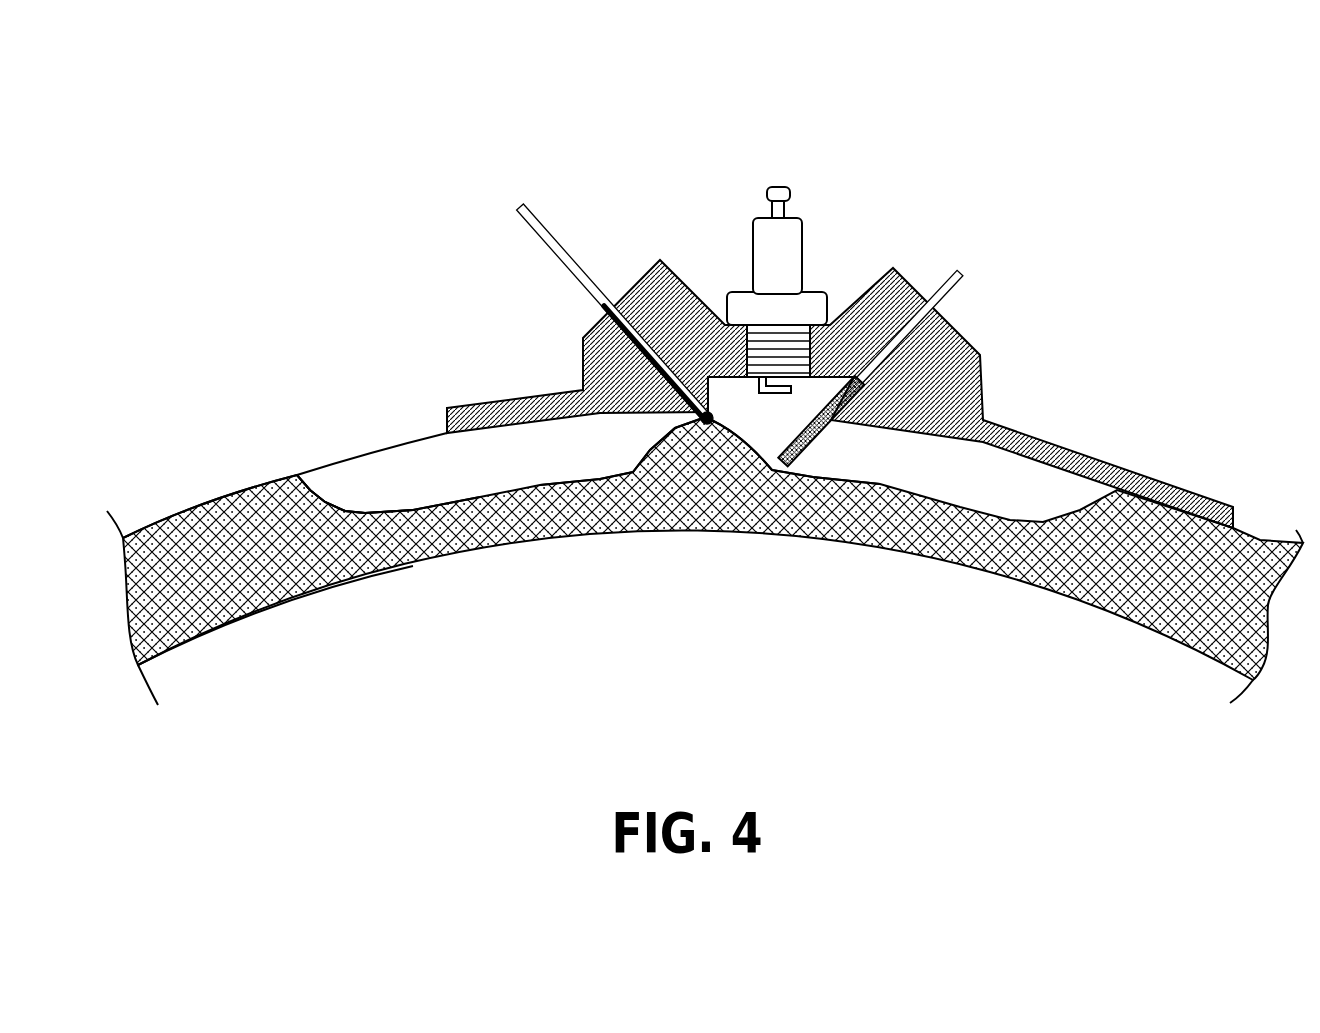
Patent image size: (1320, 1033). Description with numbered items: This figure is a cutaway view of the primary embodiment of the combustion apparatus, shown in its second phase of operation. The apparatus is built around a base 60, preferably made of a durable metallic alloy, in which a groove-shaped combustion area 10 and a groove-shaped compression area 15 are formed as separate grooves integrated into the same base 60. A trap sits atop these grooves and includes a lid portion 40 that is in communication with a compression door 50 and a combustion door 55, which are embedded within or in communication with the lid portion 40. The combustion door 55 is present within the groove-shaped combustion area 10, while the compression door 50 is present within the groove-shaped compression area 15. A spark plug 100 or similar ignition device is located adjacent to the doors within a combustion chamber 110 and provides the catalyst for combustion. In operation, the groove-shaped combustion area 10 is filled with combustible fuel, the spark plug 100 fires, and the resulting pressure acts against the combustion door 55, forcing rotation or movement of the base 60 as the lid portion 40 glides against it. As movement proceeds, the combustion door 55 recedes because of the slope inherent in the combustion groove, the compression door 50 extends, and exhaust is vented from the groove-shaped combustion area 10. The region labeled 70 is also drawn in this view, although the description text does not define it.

The groove-shaped combustion area 10 is at (1003, 486).
The groove-shaped compression area 15 is at (553, 447).
The lid portion 40 is at (1043, 447).
The compression door 50 is at (620, 311).
The combustion door 55 is at (790, 453).
The base 60 is at (276, 580).
The cavity 70 is at (327, 503).
The spark plug 100 is at (780, 378).
The combustion chamber 110 is at (808, 384).